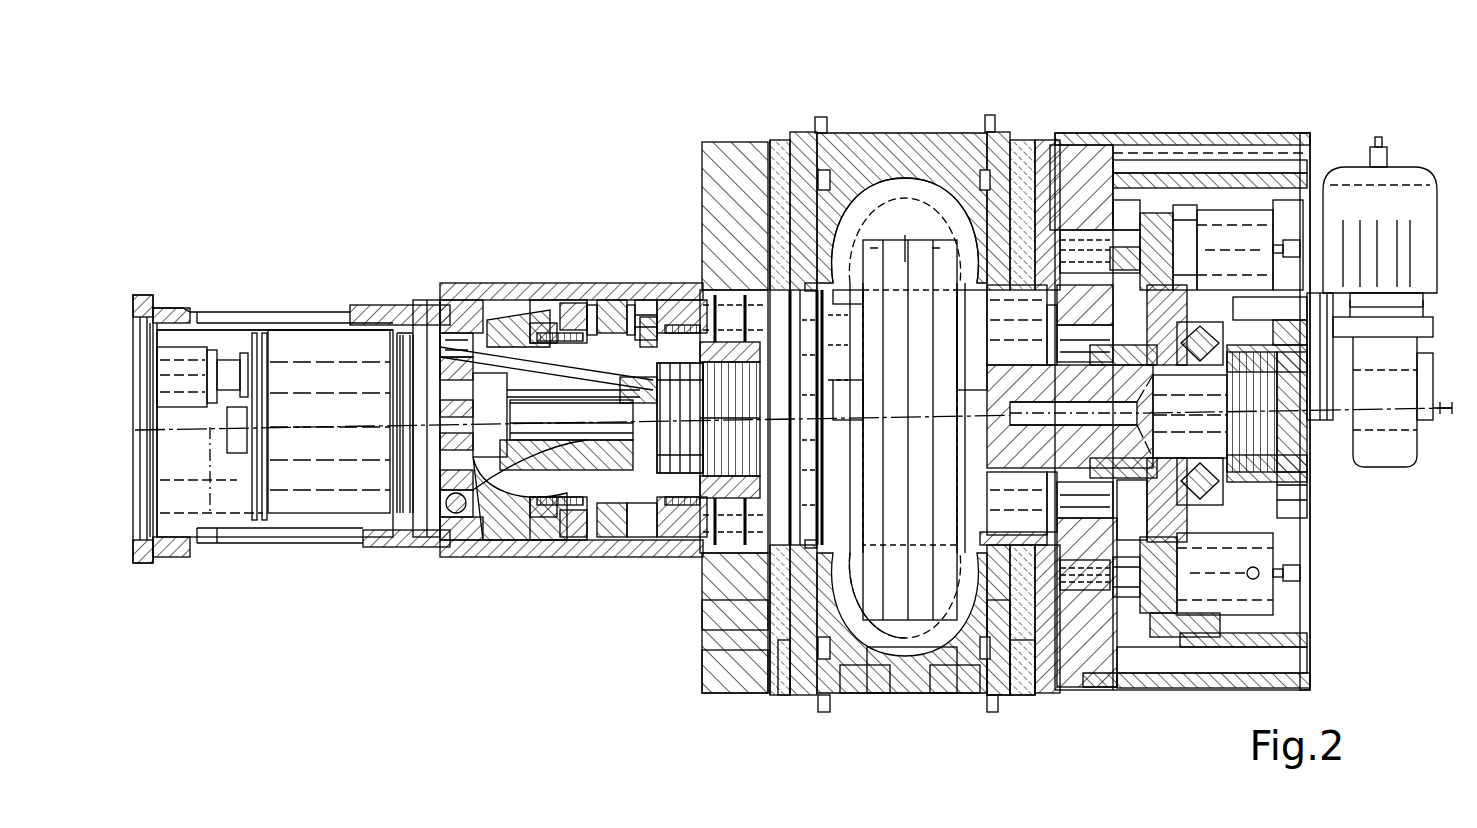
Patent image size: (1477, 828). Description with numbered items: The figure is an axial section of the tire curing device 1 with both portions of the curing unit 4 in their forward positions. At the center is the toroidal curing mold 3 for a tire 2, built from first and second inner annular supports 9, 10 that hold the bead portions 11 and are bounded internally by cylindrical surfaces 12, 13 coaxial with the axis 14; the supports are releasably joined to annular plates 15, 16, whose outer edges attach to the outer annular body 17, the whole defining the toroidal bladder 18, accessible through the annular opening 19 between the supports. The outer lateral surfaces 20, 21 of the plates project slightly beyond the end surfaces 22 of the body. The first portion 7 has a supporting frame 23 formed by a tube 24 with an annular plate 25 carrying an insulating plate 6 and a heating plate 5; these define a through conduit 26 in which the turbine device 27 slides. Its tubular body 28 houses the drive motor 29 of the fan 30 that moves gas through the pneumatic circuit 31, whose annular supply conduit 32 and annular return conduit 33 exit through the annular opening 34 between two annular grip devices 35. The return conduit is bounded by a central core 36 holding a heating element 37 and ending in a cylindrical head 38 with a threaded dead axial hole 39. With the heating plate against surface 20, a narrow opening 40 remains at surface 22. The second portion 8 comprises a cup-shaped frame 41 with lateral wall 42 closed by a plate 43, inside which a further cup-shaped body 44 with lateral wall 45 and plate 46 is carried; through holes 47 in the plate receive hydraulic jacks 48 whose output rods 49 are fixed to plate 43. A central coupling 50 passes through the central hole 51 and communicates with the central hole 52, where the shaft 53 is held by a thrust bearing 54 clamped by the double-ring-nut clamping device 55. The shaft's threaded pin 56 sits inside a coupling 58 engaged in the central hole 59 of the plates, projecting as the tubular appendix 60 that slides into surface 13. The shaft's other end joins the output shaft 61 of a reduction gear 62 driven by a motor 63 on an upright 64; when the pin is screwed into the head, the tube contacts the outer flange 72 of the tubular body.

The device 1 is at (966, 96).
The tire 2 is at (913, 133).
The toroidal curing mold 3 is at (797, 142).
The gas curing unit 4 is at (378, 578).
The annular heating plate 5 is at (803, 143).
The annular insulating plate 6 is at (775, 148).
The first portion 7 is at (420, 553).
The second portion 8 is at (1177, 702).
The first inner annular support 9 is at (838, 380).
The second inner annular support 10 is at (877, 270).
The bead portion 11 is at (948, 281).
The cylindrical surface 12 is at (835, 296).
The cylindrical surface 13 is at (957, 310).
The axis 14 is at (213, 530).
The annular plate 15 is at (710, 660).
The annular plate 16 is at (968, 685).
The outer annular body 17 is at (907, 677).
The toroidal bladder 18 is at (877, 680).
The annular opening 19 is at (878, 550).
The outer lateral surface 20 is at (710, 627).
The outer lateral surface 21 is at (1000, 660).
The end surface 22 is at (790, 697).
The supporting frame 23 is at (660, 567).
The tube 24 is at (453, 553).
The annular plate 25 is at (713, 202).
The through conduit 26 is at (703, 537).
The turbine device 27 is at (373, 513).
The tubular body 28 is at (375, 312).
The drive motor 29 is at (298, 365).
The fan 30 is at (432, 330).
The pneumatic circuit 31 is at (482, 297).
The annular supply conduit 32 is at (593, 300).
The annular return conduit 33 is at (625, 305).
The annular opening 34 is at (650, 300).
The annular grip device 35 is at (575, 300).
The central core 36 is at (583, 547).
The heating element 37 is at (477, 527).
The cylindrical head 38 is at (761, 421).
The dead axial hole 39 is at (745, 455).
The opening 40 is at (1000, 123).
The cup-shaped frame 41 is at (1111, 702).
The lateral wall 42 is at (1267, 683).
The plate 43 is at (1063, 663).
The cup-shaped body 44 is at (1217, 657).
The lateral wall 45 is at (1287, 640).
The plate 46 is at (1220, 468).
The through hole 47 is at (1173, 190).
The hydraulic jack 48 is at (1257, 190).
The output rod 49 is at (1117, 200).
The central coupling 50 is at (1171, 197).
The central hole 51 is at (1060, 498).
The central hole 52 is at (1120, 540).
The shaft 53 is at (1147, 353).
The thrust bearing 54 is at (1208, 190).
The double-ring-nut clamping device 55 is at (1293, 319).
The threaded pin 56 is at (990, 370).
The coupling 58 is at (980, 310).
The central hole 59 is at (975, 355).
The tubular appendix 60 is at (957, 517).
The output shaft 61 is at (1368, 410).
The reduction gear 62 is at (1400, 393).
The motor 63 is at (1337, 190).
The upright 64 is at (1293, 190).
The outer flange 72 is at (147, 300).